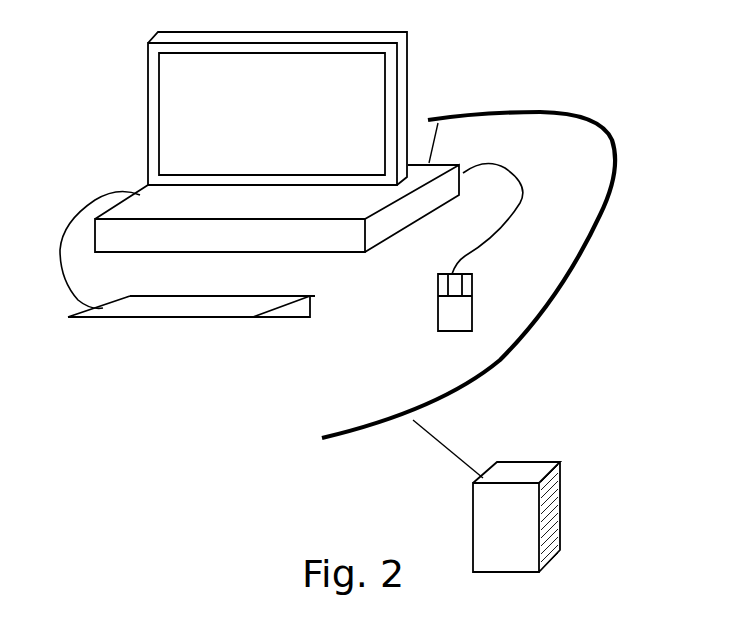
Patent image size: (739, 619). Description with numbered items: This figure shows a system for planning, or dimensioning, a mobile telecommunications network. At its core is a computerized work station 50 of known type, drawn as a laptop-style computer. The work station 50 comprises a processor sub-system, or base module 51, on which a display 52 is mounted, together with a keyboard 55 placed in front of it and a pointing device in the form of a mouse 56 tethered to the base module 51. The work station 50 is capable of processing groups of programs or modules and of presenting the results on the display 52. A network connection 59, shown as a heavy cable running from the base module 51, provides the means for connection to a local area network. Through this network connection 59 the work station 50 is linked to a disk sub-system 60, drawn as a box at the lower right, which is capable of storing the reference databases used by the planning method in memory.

The work station 50 is at (142, 438).
The base module 51 is at (378, 230).
The display 52 is at (175, 120).
The keyboard 55 is at (237, 305).
The mouse 56 is at (463, 308).
The network connection 59 is at (527, 110).
The disk sub-system 60 is at (527, 472).